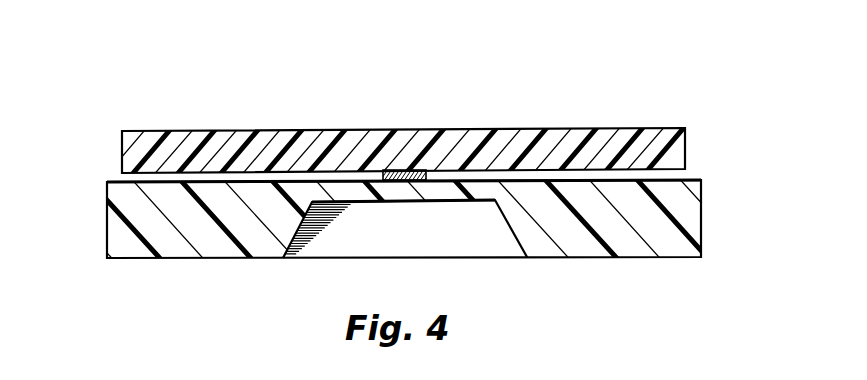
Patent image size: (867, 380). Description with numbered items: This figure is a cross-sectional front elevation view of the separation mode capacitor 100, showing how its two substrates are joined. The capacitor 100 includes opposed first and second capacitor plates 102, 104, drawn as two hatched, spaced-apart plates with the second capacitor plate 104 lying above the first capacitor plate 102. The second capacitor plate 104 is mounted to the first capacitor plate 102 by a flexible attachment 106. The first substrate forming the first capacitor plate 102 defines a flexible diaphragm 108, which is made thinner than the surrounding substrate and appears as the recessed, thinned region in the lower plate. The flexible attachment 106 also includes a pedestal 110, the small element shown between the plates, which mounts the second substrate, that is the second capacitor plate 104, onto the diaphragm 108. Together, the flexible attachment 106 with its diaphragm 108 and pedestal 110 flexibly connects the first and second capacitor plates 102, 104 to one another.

The separation mode capacitor 100 is at (397, 161).
The first capacitor plate 102 is at (397, 228).
The second capacitor plate 104 is at (122, 158).
The flexible attachment 106 is at (427, 212).
The flexible diaphragm 108 is at (353, 190).
The pedestal 110 is at (384, 172).